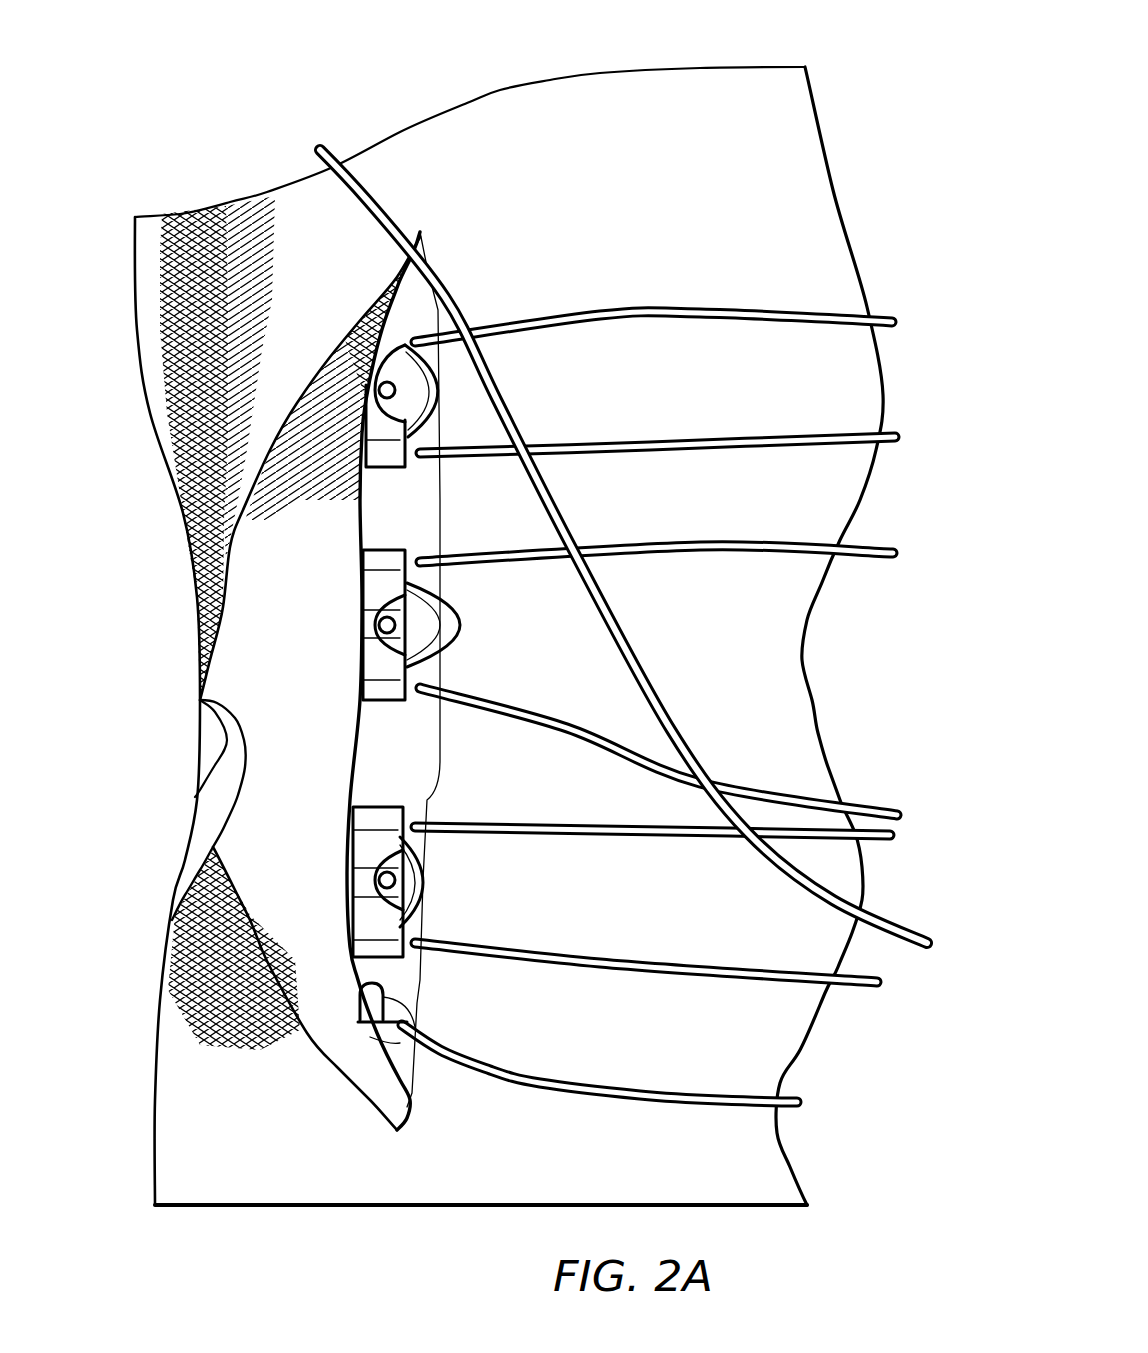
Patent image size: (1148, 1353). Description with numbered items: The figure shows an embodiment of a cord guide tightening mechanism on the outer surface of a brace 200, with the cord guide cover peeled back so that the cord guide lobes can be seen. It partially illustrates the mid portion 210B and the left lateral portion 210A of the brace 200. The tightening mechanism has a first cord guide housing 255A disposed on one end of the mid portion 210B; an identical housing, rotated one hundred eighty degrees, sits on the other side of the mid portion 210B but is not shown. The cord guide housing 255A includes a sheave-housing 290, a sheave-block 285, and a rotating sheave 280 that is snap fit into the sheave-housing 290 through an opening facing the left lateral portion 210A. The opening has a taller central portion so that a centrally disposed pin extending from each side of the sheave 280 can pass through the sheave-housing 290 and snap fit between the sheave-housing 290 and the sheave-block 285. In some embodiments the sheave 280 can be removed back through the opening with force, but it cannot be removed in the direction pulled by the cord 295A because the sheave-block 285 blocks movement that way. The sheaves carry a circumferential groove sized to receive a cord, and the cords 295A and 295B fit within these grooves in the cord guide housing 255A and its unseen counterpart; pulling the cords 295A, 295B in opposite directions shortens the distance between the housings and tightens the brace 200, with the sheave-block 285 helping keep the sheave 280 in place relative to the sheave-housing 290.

The brace 200 is at (318, 76).
The left lateral portion 210A is at (200, 240).
The mid portion 210B is at (594, 105).
The first cord guide housing 255A is at (261, 681).
The rotating sheave 280 is at (408, 495).
The sheave-block 285 is at (420, 380).
The sheave-housing 290 is at (377, 437).
The cord 295A is at (877, 315).
The cord 295B is at (853, 983).